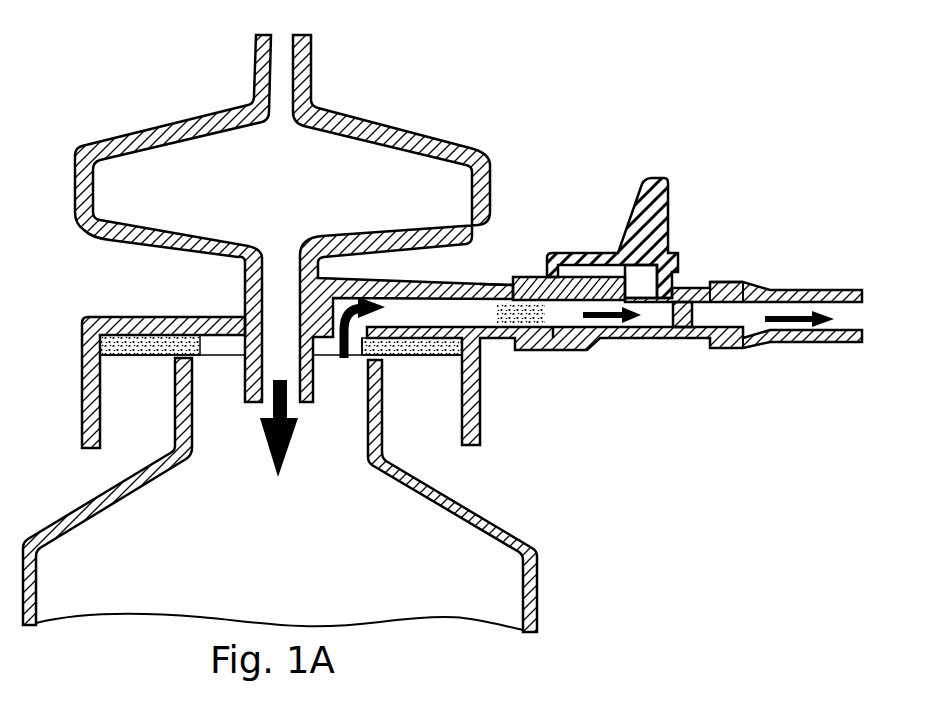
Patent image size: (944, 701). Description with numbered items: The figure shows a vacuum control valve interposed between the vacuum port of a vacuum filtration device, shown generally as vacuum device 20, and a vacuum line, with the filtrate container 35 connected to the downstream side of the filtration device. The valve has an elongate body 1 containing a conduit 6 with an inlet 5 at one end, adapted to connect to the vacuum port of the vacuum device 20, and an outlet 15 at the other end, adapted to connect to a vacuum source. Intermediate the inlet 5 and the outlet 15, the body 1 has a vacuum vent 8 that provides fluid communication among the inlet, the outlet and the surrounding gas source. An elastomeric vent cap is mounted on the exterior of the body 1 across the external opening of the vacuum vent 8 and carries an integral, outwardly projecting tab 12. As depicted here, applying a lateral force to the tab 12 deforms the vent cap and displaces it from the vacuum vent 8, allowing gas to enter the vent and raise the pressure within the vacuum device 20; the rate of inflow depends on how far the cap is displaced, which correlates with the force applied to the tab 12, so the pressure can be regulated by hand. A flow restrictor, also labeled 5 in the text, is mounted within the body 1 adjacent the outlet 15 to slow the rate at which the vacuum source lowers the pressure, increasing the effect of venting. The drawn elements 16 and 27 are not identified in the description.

The elongate body 1 is at (610, 340).
The inlet 5 is at (522, 278).
The conduit 6 is at (570, 340).
The vacuum vent 8 is at (628, 270).
The tab 12 is at (668, 215).
The outlet 15 is at (745, 284).
The partition wall 16 is at (693, 323).
The vacuum device 20 is at (415, 137).
The channel wall 27 is at (503, 282).
The filtrate container 35 is at (62, 527).